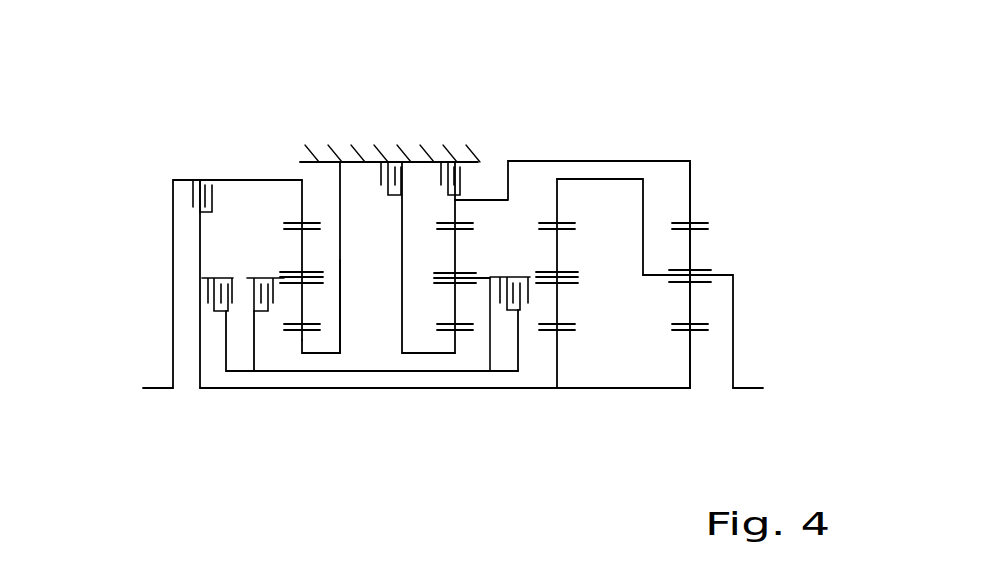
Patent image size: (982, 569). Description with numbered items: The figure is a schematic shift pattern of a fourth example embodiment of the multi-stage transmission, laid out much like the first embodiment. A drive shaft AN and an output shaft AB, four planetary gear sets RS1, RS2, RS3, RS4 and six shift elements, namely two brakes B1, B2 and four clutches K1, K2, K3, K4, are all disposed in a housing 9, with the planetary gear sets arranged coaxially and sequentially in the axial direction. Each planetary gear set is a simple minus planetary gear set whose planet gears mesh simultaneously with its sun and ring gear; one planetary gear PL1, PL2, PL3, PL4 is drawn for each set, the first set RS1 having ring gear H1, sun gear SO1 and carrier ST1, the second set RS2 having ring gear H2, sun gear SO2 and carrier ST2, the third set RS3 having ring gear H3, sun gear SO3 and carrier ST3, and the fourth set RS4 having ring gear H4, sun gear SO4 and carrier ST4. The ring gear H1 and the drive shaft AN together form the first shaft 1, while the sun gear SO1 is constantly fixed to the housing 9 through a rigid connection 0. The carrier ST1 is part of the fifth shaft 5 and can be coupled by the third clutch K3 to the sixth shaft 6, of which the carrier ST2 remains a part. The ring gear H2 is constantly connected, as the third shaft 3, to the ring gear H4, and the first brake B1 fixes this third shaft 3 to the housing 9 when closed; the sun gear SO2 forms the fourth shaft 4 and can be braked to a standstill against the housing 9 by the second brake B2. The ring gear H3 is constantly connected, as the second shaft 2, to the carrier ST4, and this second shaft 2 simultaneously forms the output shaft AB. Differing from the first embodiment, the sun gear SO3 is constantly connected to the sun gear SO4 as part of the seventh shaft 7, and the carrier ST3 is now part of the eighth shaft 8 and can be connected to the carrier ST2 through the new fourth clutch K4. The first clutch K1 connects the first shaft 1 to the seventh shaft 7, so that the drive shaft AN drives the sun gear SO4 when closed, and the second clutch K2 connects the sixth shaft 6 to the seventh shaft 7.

The rigid connection 0 is at (392, 156).
The first shaft 1 is at (172, 212).
The second shaft 2 is at (735, 312).
The third shaft 3 is at (672, 161).
The fourth shaft 4 is at (403, 253).
The fifth shaft 5 is at (341, 310).
The sixth shaft 6 is at (297, 372).
The seventh shaft 7 is at (322, 389).
The eighth shaft 8 is at (520, 310).
The housing 9 is at (342, 257).
The drive shaft AN is at (165, 388).
The output shaft AB is at (750, 389).
The first clutch K1 is at (193, 178).
The second clutch K2 is at (210, 297).
The third clutch K3 is at (262, 290).
The fourth clutch K4 is at (520, 275).
The first brake B1 is at (463, 160).
The second brake B2 is at (408, 160).
The planetary gears of the first planetary gear set PL1 is at (185, 256).
The planetary gears of the second planetary gear set PL2 is at (502, 256).
The planetary gears of the third planetary gear set PL3 is at (705, 255).
The planetary gears of the fourth planetary gear set PL4 is at (727, 282).
The ring gear of the first planetary gear set H1 is at (302, 212).
The ring gear of the second planetary gear set H2 is at (457, 210).
The ring gear of the third planetary gear set H3 is at (557, 210).
The ring gear of the fourth planetary gear set H4 is at (690, 178).
The sun gear of the first planetary gear set SO1 is at (300, 337).
The sun gear of the second planetary gear set SO2 is at (472, 338).
The sun gear of the third planetary gear set SO3 is at (558, 352).
The sun gear of the fourth planetary gear set SO4 is at (690, 353).
The carrier of the first planetary gear set ST1 is at (290, 276).
The carrier of the second planetary gear set ST2 is at (484, 275).
The carrier of the third planetary gear set ST3 is at (557, 180).
The carrier of the fourth planetary gear set ST4 is at (718, 275).
The first planetary gear set RS1 is at (272, 338).
The second planetary gear set RS2 is at (457, 340).
The third planetary gear set RS3 is at (705, 373).
The fourth planetary gear set RS4 is at (575, 337).